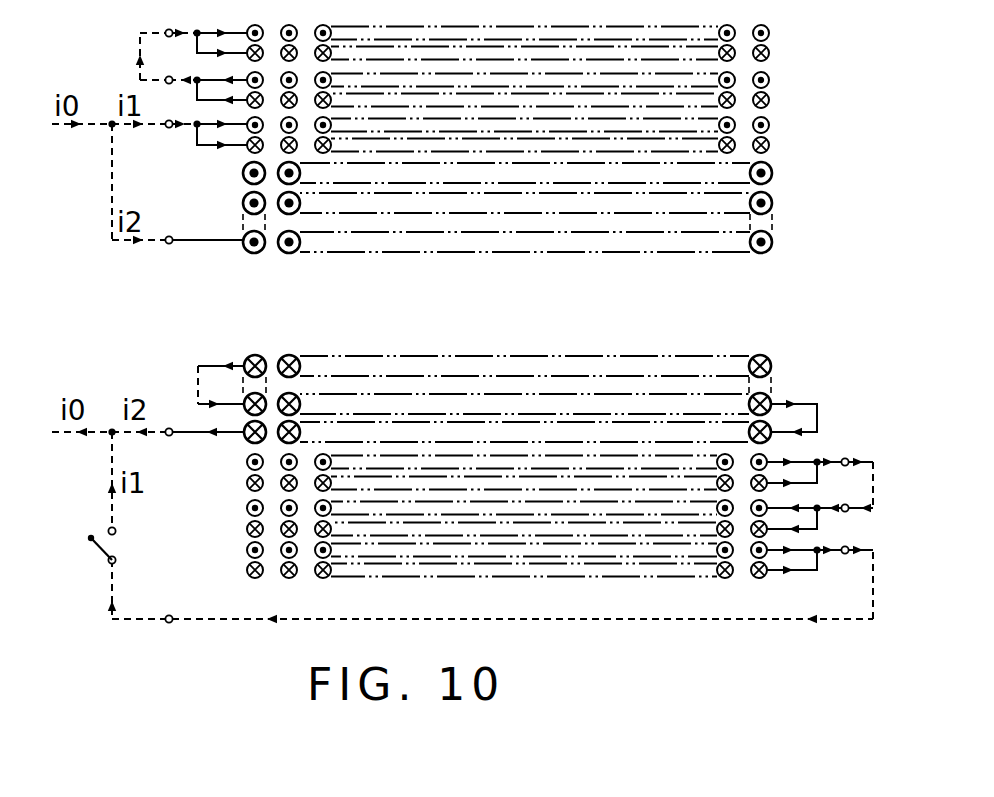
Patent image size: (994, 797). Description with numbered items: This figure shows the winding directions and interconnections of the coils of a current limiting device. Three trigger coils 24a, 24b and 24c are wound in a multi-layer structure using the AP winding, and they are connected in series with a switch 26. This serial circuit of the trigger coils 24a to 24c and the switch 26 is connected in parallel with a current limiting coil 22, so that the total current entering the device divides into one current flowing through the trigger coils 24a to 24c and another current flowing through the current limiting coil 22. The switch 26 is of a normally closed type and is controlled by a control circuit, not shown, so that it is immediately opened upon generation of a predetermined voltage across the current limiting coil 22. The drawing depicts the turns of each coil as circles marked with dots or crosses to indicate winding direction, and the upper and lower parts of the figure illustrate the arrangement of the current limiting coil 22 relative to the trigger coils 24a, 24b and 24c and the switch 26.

The current limiting coil 22 is at (778, 226).
The trigger coil 24a is at (770, 133).
The trigger coil 24b is at (770, 88).
The trigger coil 24c is at (770, 41).
The switch 26 is at (116, 545).